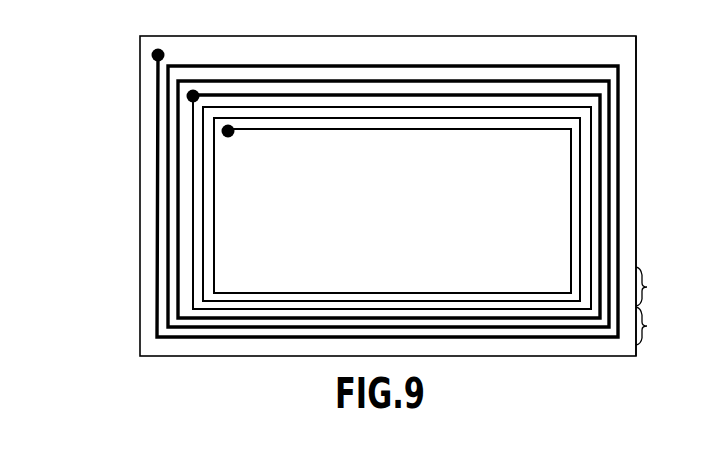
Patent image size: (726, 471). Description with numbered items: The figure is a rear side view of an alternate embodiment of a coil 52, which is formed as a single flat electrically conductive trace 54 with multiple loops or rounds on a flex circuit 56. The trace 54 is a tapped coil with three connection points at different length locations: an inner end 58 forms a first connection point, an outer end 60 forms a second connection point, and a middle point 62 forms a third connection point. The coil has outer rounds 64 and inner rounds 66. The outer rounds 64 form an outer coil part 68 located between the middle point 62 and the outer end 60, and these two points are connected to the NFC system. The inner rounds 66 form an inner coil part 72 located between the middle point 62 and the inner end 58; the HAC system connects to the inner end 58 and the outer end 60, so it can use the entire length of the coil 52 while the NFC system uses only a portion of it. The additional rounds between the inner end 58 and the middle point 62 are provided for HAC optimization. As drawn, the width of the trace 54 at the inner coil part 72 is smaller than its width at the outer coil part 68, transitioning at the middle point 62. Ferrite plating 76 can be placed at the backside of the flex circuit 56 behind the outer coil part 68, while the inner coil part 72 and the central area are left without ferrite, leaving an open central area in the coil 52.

The coil 52 is at (387, 170).
The electrically conductive trace 54 is at (387, 170).
The outer coil part 68 is at (436, 64).
The flex circuit 56 is at (637, 63).
The inner end 58 is at (233, 136).
The outer end 60 is at (153, 51).
The middle point 62 is at (189, 100).
The outer rounds 64 is at (656, 326).
The inner rounds 66 is at (656, 286).
The inner coil part 72 is at (382, 131).
The ferrite plating 76 is at (140, 318).